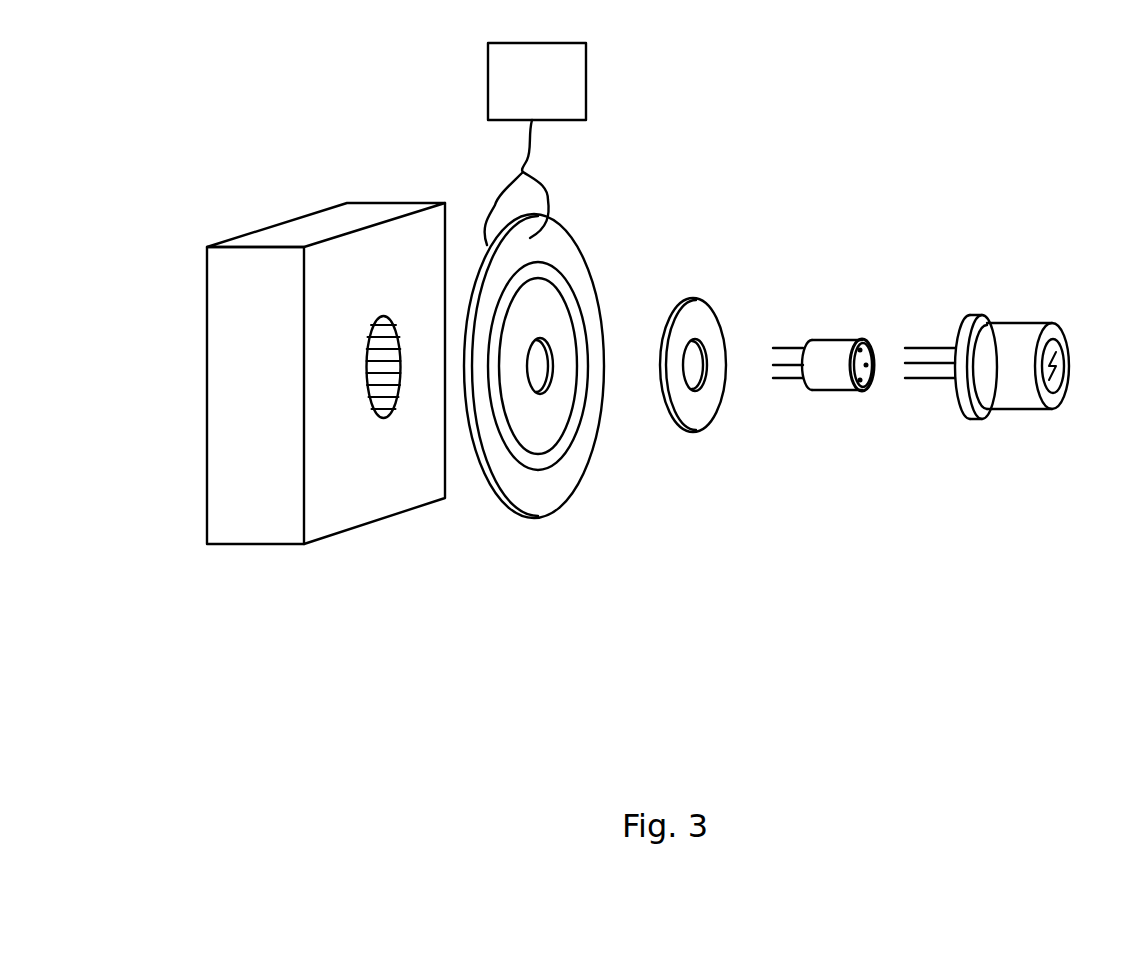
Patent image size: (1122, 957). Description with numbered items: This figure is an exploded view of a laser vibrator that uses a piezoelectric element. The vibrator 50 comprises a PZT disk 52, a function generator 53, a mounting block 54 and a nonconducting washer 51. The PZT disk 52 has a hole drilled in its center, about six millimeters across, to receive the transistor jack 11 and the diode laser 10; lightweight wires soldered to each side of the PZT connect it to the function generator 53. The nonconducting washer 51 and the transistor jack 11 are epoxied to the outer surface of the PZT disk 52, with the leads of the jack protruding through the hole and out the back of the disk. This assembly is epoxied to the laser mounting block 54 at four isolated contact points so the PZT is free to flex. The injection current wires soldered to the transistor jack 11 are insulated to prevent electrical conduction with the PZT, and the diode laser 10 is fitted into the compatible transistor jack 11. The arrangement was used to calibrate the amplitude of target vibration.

The diode laser 10 is at (1020, 320).
The transistor jack 11 is at (831, 340).
The vibrator 50 is at (463, 581).
The nonconducting washer 51 is at (710, 308).
The PZT disk 52 is at (587, 258).
The function generator 53 is at (556, 103).
The mounting block 54 is at (300, 216).